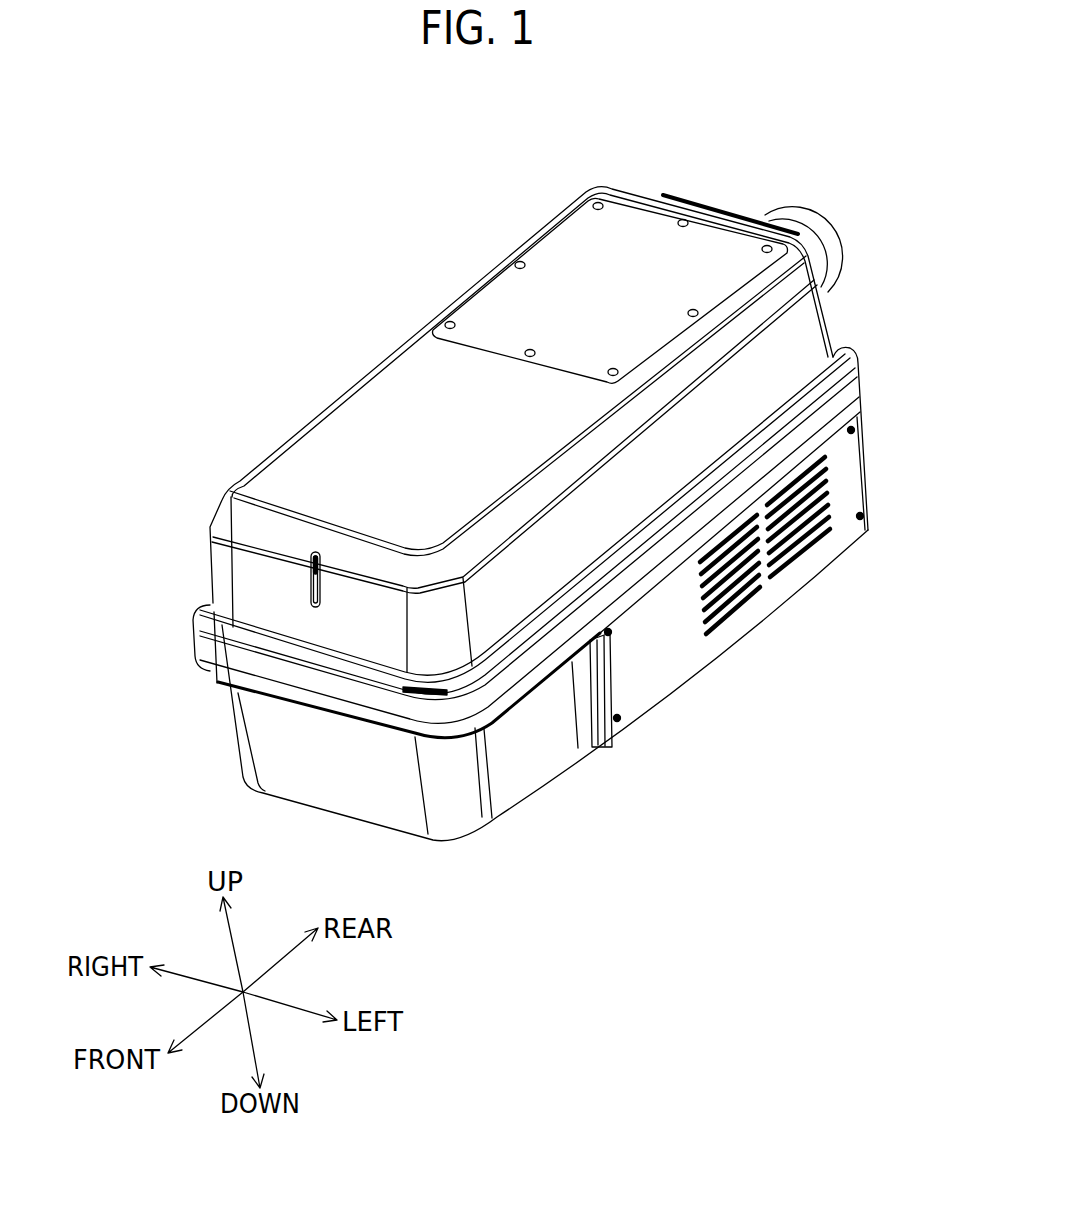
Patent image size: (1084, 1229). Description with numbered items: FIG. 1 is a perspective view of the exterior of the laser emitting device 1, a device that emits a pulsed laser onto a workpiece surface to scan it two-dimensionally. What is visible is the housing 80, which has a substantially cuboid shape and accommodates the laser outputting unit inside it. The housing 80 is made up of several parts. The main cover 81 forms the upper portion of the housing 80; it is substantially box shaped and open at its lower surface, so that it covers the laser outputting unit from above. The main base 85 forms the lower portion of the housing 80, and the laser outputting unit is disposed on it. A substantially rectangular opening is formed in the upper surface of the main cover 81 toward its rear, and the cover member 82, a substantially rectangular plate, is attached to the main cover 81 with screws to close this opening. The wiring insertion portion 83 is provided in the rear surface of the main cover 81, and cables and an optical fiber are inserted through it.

The laser emitting device 1 is at (321, 216).
The housing 80 is at (351, 452).
The main cover 81 is at (220, 564).
The cover member 82 is at (562, 267).
The wiring insertion portion 83 is at (827, 263).
The main base 85 is at (525, 772).